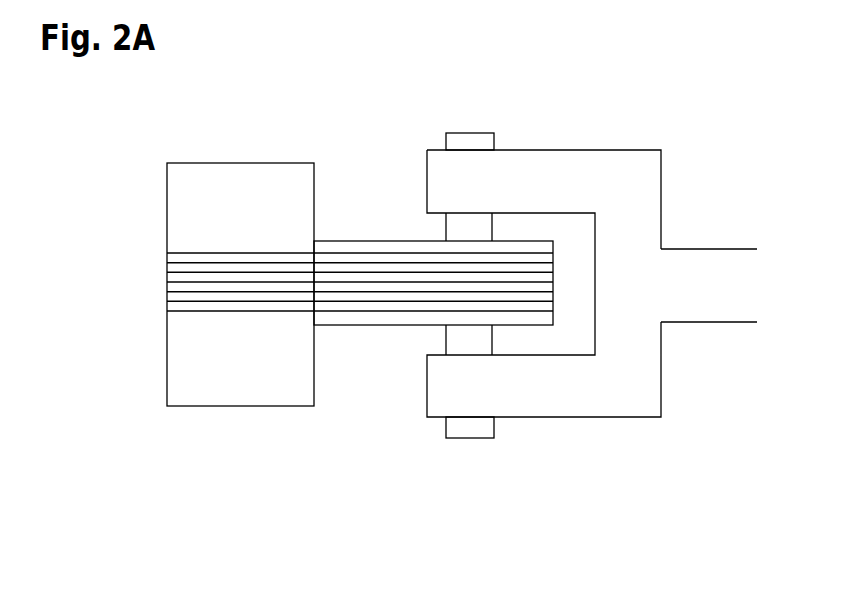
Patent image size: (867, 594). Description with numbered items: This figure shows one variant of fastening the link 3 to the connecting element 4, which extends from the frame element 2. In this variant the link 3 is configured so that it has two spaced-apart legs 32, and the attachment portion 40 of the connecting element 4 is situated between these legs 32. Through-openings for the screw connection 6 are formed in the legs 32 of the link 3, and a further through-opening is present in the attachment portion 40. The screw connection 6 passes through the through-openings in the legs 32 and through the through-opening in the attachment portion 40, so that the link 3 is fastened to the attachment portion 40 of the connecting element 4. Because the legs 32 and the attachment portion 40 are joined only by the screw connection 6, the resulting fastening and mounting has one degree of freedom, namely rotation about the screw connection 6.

The frame element 2 is at (166, 165).
The connecting element 4 is at (330, 239).
The attachment portion 40 is at (380, 241).
The legs 32 is at (538, 150).
The screw connection 6 is at (475, 133).
The link 3 is at (708, 249).